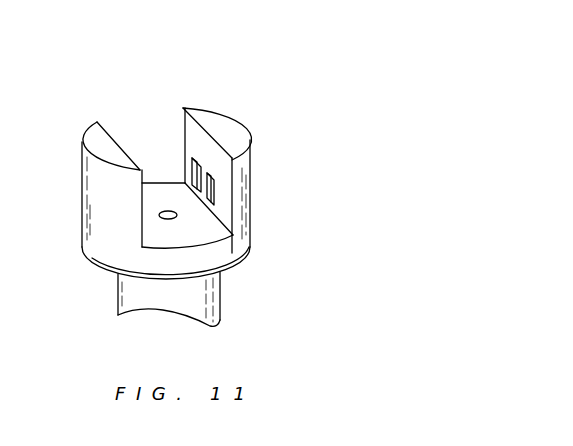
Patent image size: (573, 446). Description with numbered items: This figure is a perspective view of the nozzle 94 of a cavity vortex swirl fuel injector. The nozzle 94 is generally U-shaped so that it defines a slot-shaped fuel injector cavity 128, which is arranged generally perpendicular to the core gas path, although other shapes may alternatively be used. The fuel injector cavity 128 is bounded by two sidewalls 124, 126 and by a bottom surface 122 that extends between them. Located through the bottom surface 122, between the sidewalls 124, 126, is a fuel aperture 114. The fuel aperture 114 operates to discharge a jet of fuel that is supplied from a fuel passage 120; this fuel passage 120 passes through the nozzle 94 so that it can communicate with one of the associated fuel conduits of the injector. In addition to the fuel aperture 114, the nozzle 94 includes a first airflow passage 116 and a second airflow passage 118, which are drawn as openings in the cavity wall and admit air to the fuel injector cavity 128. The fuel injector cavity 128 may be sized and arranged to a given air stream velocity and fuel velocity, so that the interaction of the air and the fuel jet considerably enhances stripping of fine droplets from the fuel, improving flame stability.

The nozzle 94 is at (72, 272).
The fuel aperture 114 is at (170, 210).
The first airflow passage 116 is at (192, 165).
The second airflow passage 118 is at (199, 160).
The fuel passage 120 is at (163, 316).
The bottom surface 122 is at (234, 266).
The sidewall 124 is at (193, 156).
The sidewall 126 is at (113, 132).
The fuel injector cavity 128 is at (116, 70).